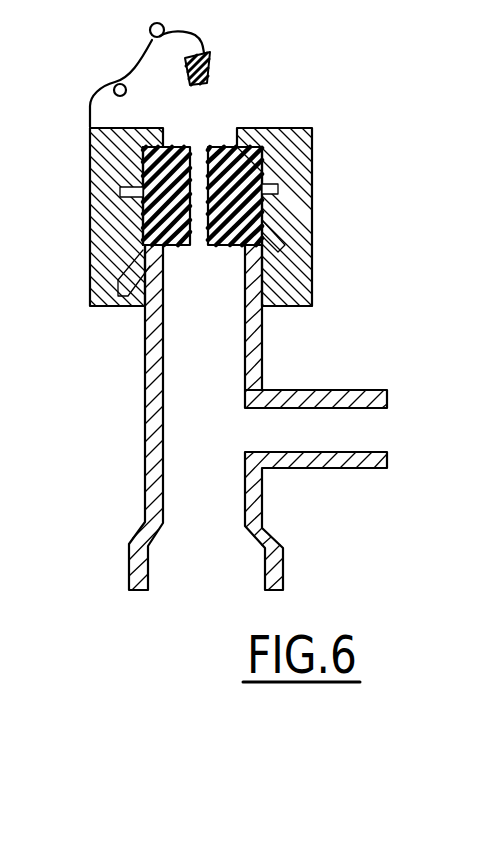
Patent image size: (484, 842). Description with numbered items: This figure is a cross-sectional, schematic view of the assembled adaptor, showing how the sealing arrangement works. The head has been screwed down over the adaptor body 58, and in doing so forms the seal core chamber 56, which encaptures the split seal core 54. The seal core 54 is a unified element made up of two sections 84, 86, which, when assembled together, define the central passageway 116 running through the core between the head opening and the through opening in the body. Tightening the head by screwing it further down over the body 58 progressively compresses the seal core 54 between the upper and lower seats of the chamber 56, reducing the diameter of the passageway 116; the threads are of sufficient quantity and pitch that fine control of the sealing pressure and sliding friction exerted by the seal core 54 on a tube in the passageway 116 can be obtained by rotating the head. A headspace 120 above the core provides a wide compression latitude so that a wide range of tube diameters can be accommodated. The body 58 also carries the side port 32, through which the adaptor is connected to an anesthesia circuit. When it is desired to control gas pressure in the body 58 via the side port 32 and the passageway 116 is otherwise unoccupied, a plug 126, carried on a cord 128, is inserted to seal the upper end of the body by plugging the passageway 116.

The side port 32 is at (332, 391).
The split seal core 54 is at (160, 150).
The core chamber 56 is at (262, 180).
The adaptor body 58 is at (255, 365).
The section 84 is at (150, 212).
The section 86 is at (258, 243).
The central passageway 116 is at (203, 150).
The headspace 120 is at (263, 191).
The plug 126 is at (211, 70).
The cord 128 is at (130, 68).